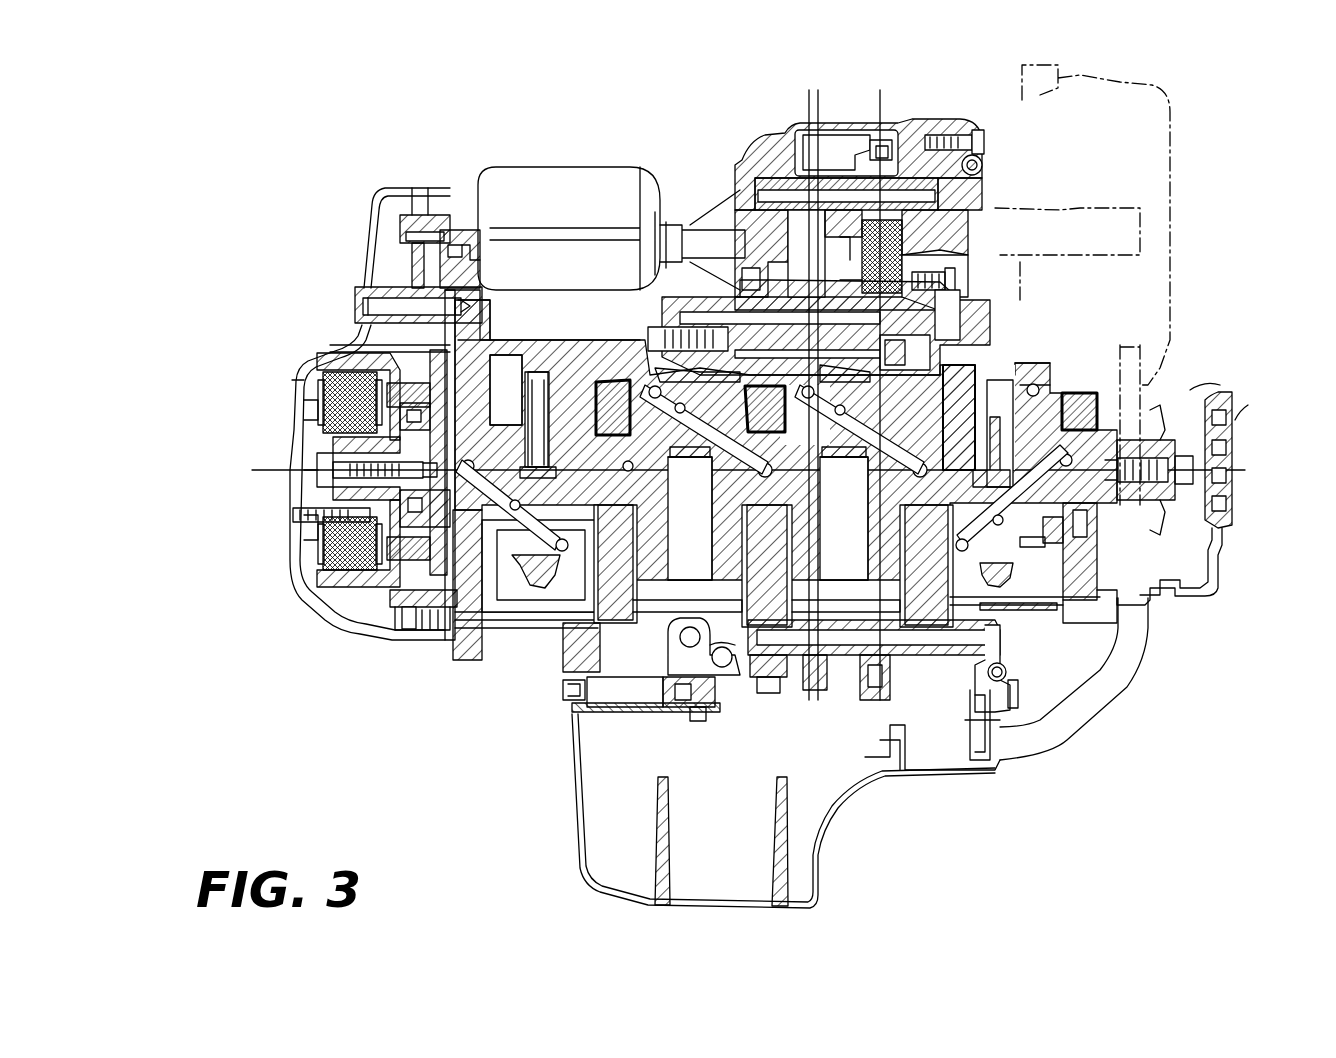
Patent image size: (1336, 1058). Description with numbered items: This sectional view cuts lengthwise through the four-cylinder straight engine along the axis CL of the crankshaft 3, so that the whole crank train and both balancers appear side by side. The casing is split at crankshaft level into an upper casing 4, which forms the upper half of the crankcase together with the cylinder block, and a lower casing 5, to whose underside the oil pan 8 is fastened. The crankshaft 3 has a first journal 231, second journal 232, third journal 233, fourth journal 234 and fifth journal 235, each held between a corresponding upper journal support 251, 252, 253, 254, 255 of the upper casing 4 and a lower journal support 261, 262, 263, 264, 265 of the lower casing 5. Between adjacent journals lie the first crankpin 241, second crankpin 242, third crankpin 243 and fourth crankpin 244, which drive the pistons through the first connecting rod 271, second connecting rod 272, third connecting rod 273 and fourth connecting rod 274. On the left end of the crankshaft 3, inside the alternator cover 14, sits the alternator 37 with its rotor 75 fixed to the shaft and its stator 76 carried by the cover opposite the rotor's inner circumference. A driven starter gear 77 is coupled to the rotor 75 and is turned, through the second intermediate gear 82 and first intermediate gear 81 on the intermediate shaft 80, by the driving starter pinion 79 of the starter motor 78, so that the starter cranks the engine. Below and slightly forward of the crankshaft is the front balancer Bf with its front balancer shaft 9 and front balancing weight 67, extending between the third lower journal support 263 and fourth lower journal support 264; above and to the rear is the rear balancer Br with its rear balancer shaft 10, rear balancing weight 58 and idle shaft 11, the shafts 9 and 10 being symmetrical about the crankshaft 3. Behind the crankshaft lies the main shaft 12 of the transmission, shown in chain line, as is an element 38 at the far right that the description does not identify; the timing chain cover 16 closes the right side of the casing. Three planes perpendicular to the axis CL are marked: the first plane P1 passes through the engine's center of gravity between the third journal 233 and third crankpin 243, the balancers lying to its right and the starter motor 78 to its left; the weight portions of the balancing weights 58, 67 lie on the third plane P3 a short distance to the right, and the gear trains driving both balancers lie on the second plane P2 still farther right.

The crankshaft 3 is at (648, 580).
The upper casing 4 is at (950, 360).
The lower casing 5 is at (565, 690).
The oil pan 8 is at (575, 815).
The front balancer shaft 9 is at (1000, 636).
The rear balancer shaft 10 is at (992, 174).
The idle shaft 11 is at (960, 312).
The main shaft 12 is at (1070, 210).
The alternator cover 14 is at (303, 385).
The timing chain cover 16 is at (1220, 590).
The alternator 37 is at (322, 372).
The case outline 38 is at (1176, 215).
The rear balancing weight 58 is at (858, 244).
The front balancing weight 67 is at (800, 700).
The rotor 75 is at (345, 362).
The stator 76 is at (312, 418).
The driven starter gear 77 is at (402, 612).
The starter motor 78 is at (565, 180).
The driving starter pinion 79 is at (432, 215).
The intermediate shaft 80 is at (462, 307).
The first intermediate gear 81 is at (412, 258).
The second intermediate gear 82 is at (442, 262).
The first journal 231 is at (492, 460).
The second journal 232 is at (620, 465).
The third journal 233 is at (760, 503).
The fourth journal 234 is at (913, 503).
The fifth journal 235 is at (1062, 459).
The first crankpin 241 is at (526, 551).
The second crankpin 242 is at (715, 413).
The third crankpin 243 is at (868, 413).
The fourth crankpin 244 is at (1010, 559).
The first upper journal support 251 is at (480, 362).
The second upper journal support 252 is at (608, 385).
The third upper journal support 253 is at (772, 372).
The fourth upper journal support 254 is at (945, 378).
The fifth upper journal support 255 is at (1085, 400).
The first lower journal support 261 is at (470, 605).
The second lower journal support 262 is at (570, 612).
The third lower journal support 263 is at (738, 578).
The fourth lower journal support 264 is at (930, 580).
The fifth lower journal support 265 is at (1095, 585).
The first connecting rod 271 is at (537, 385).
The second connecting rod 272 is at (692, 490).
The third connecting rod 273 is at (846, 490).
The fourth connecting rod 274 is at (998, 392).
The rear balancer Br is at (1000, 168).
The front balancer Bf is at (845, 698).
The axis of the crankshaft CL is at (1245, 470).
The first plane P1 is at (806, 125).
The second plane P2 is at (879, 125).
The third plane P3 is at (820, 120).